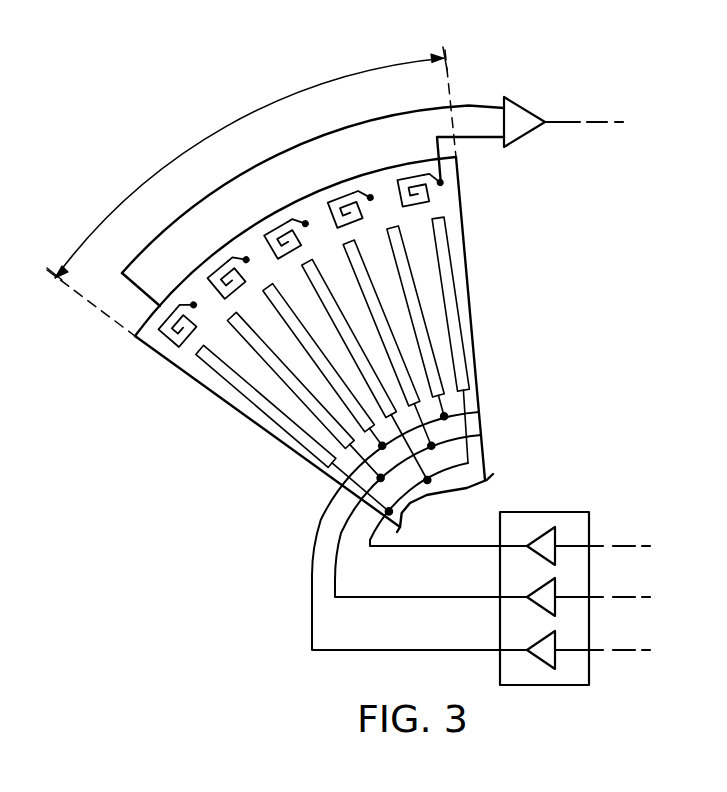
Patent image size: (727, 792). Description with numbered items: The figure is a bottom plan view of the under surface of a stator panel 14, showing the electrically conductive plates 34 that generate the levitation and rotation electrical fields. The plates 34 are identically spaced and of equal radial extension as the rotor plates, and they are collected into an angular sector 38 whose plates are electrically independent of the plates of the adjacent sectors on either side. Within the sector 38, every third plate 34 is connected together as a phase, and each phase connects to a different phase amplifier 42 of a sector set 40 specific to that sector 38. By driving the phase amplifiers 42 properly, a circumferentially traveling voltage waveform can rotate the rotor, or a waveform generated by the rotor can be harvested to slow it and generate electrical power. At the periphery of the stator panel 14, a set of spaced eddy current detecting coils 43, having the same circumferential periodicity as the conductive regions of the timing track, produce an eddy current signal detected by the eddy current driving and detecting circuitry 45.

The stator panel 14 is at (433, 209).
The angular sector 38 is at (232, 121).
The eddy current driving and detecting circuitry 45 is at (525, 104).
The eddy current detecting coil 43 is at (235, 291).
The electrically conductive plate 34 is at (330, 390).
The sector set 40 is at (545, 512).
The phase amplifier 42 is at (534, 556).